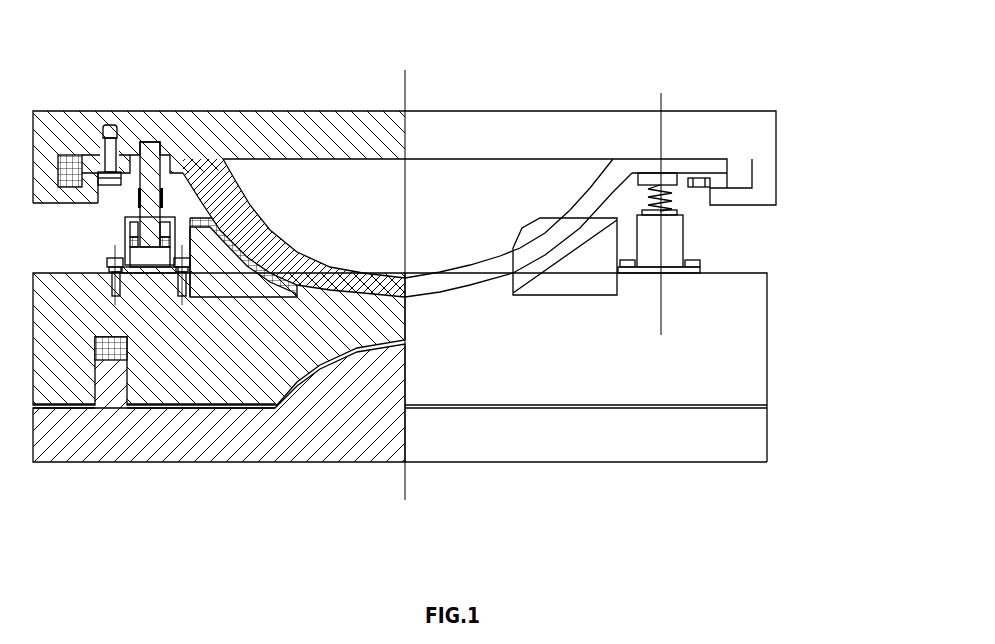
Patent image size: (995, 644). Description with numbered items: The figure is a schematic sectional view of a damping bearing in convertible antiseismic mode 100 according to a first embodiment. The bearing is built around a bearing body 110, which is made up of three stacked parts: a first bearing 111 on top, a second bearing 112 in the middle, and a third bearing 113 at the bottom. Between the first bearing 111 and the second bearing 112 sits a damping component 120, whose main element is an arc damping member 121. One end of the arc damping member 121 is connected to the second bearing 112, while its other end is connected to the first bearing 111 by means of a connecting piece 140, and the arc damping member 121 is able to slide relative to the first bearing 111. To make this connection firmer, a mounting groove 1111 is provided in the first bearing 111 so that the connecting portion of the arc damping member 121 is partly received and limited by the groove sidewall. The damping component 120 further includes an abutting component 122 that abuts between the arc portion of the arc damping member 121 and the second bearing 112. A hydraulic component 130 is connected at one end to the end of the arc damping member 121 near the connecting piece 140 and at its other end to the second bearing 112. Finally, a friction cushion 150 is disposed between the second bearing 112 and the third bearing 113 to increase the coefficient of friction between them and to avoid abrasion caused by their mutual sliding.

The damping bearing in convertible antiseismic mode 100 is at (418, 47).
The bearing body 110 is at (843, 243).
The first bearing 111 is at (433, 204).
The mounting groove 1111 is at (230, 158).
The second bearing 112 is at (745, 345).
The third bearing 113 is at (742, 440).
The damping component 120 is at (620, 340).
The arc damping member 121 is at (467, 287).
The abutting component 122 is at (540, 283).
The hydraulic component 130 is at (125, 252).
The connecting piece 140 is at (105, 143).
The friction cushion 150 is at (190, 408).